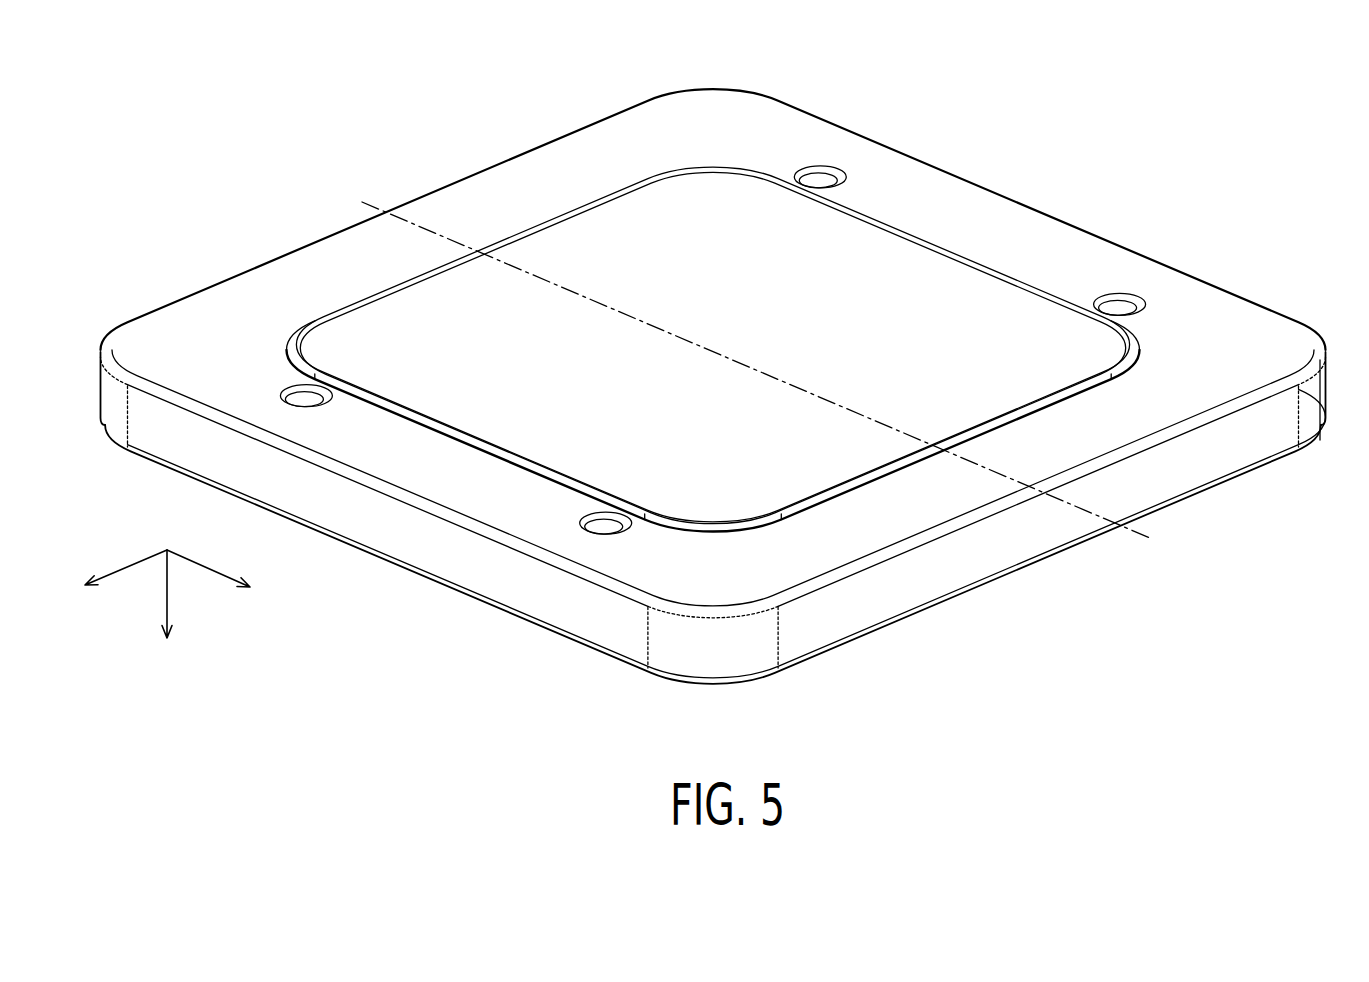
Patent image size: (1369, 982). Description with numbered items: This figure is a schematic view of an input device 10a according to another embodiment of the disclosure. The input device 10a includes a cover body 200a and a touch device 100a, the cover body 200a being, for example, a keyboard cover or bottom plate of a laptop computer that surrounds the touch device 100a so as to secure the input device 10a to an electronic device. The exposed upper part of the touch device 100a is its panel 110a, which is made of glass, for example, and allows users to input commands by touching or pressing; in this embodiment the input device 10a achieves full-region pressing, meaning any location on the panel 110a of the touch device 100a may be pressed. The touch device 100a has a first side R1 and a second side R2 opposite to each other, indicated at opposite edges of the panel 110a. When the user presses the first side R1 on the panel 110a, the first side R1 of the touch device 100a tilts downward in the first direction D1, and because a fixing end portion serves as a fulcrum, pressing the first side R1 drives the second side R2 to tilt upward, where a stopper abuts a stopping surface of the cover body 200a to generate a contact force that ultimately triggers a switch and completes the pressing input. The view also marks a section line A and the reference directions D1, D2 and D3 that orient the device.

The input device 10a is at (727, 399).
The cover body 200a is at (1187, 302).
The touch device 100a is at (769, 345).
The panel 110a is at (905, 283).
The first side R1 is at (587, 232).
The second side R2 is at (977, 410).
The section line A- A is at (362, 202).
The first direction D1 is at (167, 612).
The second direction D2 is at (228, 578).
The third direction D3 is at (107, 578).